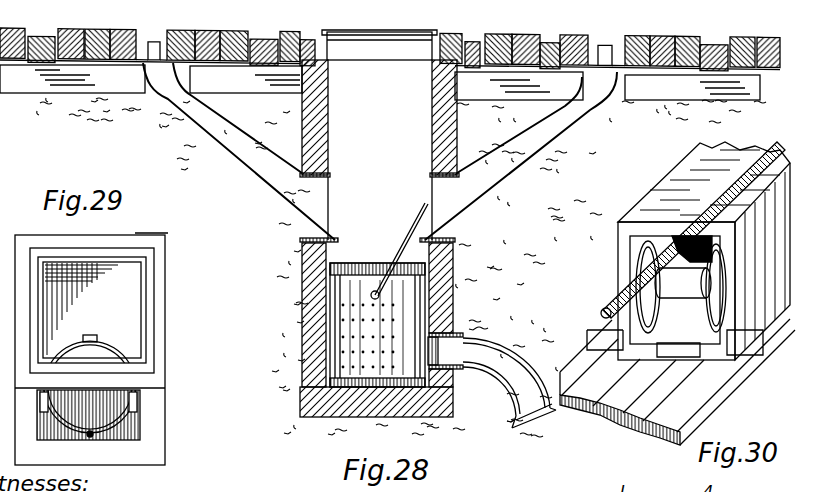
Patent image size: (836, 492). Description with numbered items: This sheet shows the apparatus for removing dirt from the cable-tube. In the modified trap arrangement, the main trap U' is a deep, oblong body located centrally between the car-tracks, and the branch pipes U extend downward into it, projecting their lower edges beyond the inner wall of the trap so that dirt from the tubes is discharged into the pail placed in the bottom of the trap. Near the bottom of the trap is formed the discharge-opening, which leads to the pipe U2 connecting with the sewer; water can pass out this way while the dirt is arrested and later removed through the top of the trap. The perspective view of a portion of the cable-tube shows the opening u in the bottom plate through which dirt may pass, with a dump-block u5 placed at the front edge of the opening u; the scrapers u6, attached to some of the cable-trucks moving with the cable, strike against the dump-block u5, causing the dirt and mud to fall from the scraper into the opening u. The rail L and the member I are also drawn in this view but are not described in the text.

In FIG. 28, the main trap U' is at (381, 223).
In FIG. 28, the branch pipes U is at (380, 151).
In FIG. 28, the sewer pipe U2 is at (492, 382).
In FIG. 30, the rail L is at (603, 309).
In FIG. 30, the scrapers u6 is at (683, 299).
In FIG. 30, the dump-block u5 is at (661, 378).
In FIG. 30, the openings u is at (605, 368).
In FIG. 30, the rail bed I is at (733, 371).